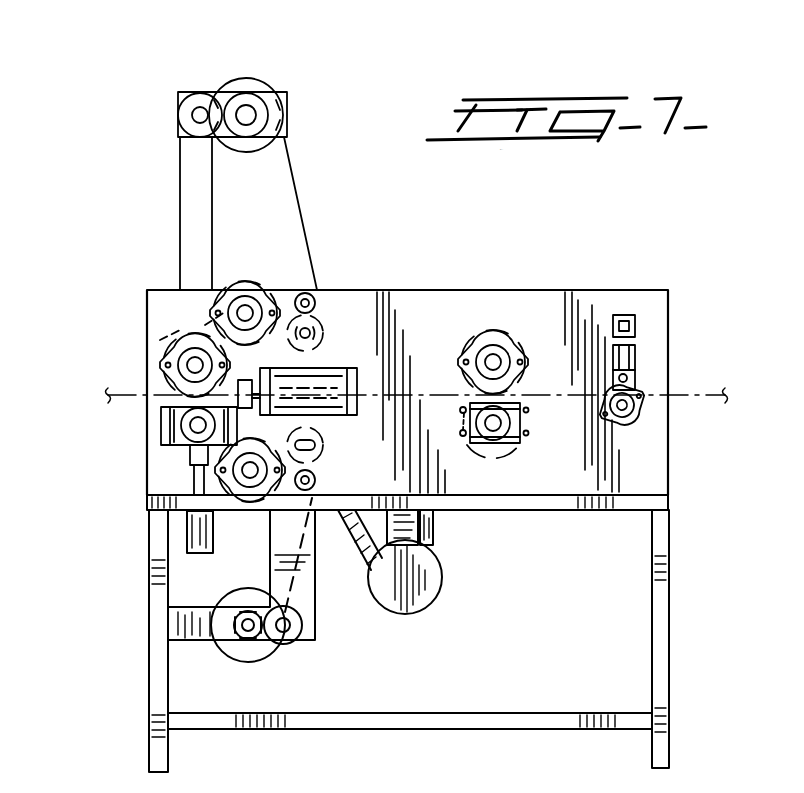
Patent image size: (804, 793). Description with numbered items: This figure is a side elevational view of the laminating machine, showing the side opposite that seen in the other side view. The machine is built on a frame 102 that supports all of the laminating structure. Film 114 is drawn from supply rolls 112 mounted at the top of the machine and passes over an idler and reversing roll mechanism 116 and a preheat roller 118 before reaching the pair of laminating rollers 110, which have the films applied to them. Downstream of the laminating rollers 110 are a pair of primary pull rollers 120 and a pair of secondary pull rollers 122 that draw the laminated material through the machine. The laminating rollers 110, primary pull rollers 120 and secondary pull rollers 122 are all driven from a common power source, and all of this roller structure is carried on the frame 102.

The frame 102 is at (142, 542).
The laminating rollers 110 is at (175, 338).
The supply rolls 112 is at (255, 80).
The film 114 is at (296, 184).
The idler and reversing roll mechanism 116 is at (335, 286).
The preheat roller 118 is at (215, 280).
The primary pull rollers 120 is at (498, 333).
The secondary pull rollers 122 is at (640, 415).